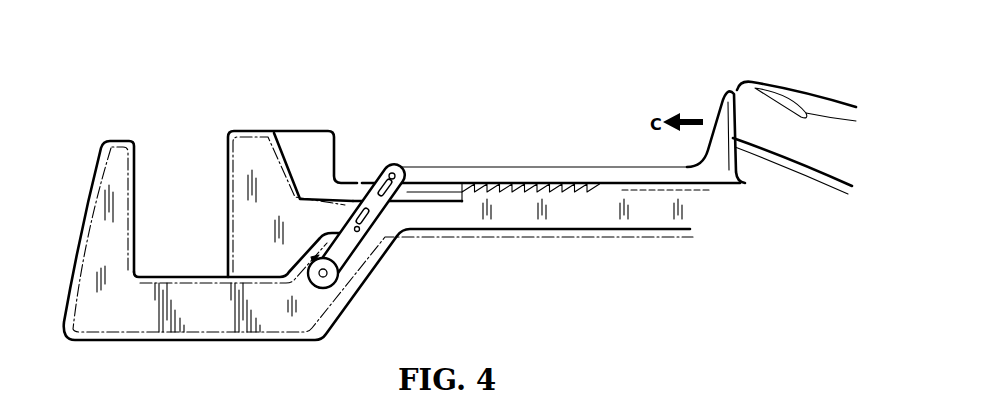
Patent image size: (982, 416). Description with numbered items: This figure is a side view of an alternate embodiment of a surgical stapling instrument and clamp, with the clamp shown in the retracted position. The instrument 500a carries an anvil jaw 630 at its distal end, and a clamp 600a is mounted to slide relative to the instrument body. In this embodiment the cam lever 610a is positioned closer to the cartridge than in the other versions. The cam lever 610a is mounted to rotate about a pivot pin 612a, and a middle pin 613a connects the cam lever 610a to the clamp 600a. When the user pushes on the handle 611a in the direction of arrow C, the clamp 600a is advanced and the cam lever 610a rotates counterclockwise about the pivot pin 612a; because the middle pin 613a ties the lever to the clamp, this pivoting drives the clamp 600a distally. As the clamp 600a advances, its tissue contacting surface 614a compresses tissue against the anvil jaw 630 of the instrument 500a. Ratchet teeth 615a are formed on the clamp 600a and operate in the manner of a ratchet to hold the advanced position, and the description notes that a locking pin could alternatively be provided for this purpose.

The instrument 500a is at (263, 333).
The anvil jaw 630 is at (119, 210).
The tissue contacting surface 614a is at (227, 160).
The clamp 600a is at (549, 158).
The ratchet teeth 615a is at (556, 200).
The handle 611a is at (724, 102).
The cam lever 610a is at (404, 154).
The middle pin 613a is at (358, 205).
The pivot pin 612a is at (338, 288).